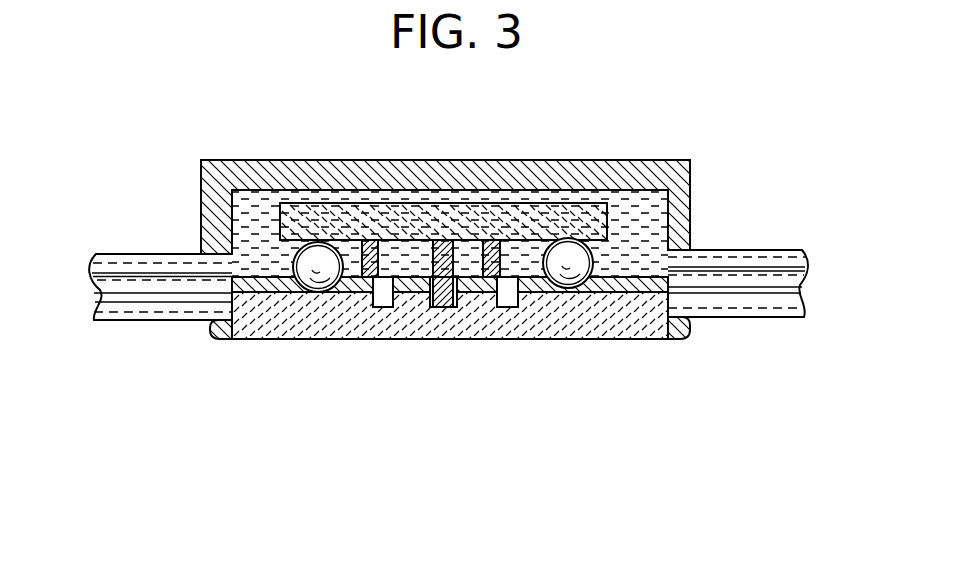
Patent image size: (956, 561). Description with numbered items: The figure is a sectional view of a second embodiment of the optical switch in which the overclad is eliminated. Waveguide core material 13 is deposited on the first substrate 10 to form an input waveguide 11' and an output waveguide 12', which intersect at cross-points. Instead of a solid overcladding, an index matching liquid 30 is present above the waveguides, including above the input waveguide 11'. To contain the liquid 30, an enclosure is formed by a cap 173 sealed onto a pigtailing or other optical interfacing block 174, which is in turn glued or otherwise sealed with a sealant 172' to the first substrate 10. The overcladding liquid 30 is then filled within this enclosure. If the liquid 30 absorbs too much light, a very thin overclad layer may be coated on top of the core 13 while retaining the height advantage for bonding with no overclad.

The waveguide core material 13 is at (200, 208).
The cap 173 is at (338, 161).
The output waveguide 12' is at (466, 149).
The index matching liquid 30 is at (658, 215).
The optical interfacing block 174 is at (130, 313).
The sealant 172' is at (450, 369).
The first substrate 10 is at (548, 322).
The input waveguide 11' is at (480, 360).